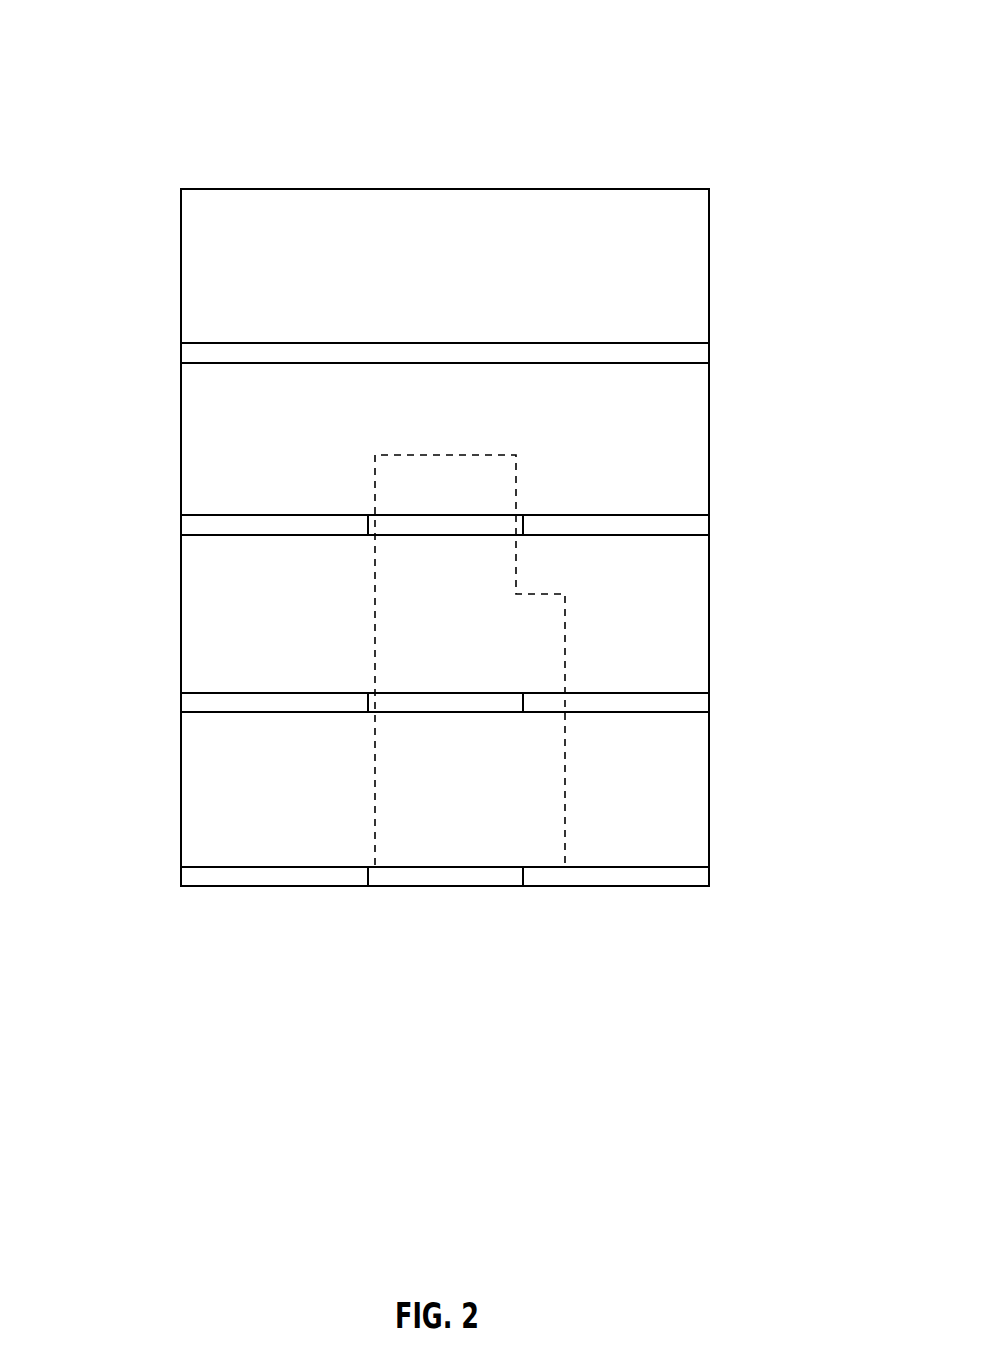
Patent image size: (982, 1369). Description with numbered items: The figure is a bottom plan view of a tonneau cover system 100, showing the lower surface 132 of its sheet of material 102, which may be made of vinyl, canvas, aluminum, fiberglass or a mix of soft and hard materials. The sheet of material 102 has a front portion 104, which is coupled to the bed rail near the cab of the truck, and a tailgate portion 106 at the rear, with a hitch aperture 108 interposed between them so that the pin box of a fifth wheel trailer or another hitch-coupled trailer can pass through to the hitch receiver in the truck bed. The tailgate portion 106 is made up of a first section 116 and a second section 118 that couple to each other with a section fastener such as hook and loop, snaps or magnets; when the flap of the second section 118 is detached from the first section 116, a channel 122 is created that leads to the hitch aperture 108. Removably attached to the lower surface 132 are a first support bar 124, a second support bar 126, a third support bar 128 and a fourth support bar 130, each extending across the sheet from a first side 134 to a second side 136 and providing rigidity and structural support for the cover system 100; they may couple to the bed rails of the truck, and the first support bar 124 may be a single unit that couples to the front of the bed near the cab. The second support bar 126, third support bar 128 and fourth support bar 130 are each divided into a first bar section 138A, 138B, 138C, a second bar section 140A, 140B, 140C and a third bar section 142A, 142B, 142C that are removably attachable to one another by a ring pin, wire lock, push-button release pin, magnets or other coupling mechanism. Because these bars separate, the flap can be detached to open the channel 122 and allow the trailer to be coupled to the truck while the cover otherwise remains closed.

The tonneau cover system 100 is at (196, 44).
The sheet of material 102 is at (571, 202).
The front portion 104 is at (475, 220).
The tailgate portion 106 is at (276, 842).
The hitch aperture 108 is at (386, 470).
The first section 116 is at (693, 775).
The second section 118 is at (193, 815).
The channel 122 is at (406, 842).
The first support bar 124 is at (693, 355).
The second support bar 126 is at (276, 537).
The third support bar 128 is at (276, 713).
The fourth support bar 130 is at (252, 875).
The lower surface 132 is at (362, 220).
The first side 134 is at (692, 561).
The second side 136 is at (200, 461).
The first bar section 138A is at (187, 527).
The first bar section 138B is at (187, 700).
The first bar section 138C is at (187, 872).
The second bar section 140A is at (483, 528).
The second bar section 140B is at (486, 703).
The second bar section 140C is at (492, 875).
The third bar section 142A is at (693, 526).
The third bar section 142B is at (693, 705).
The third bar section 142C is at (687, 875).